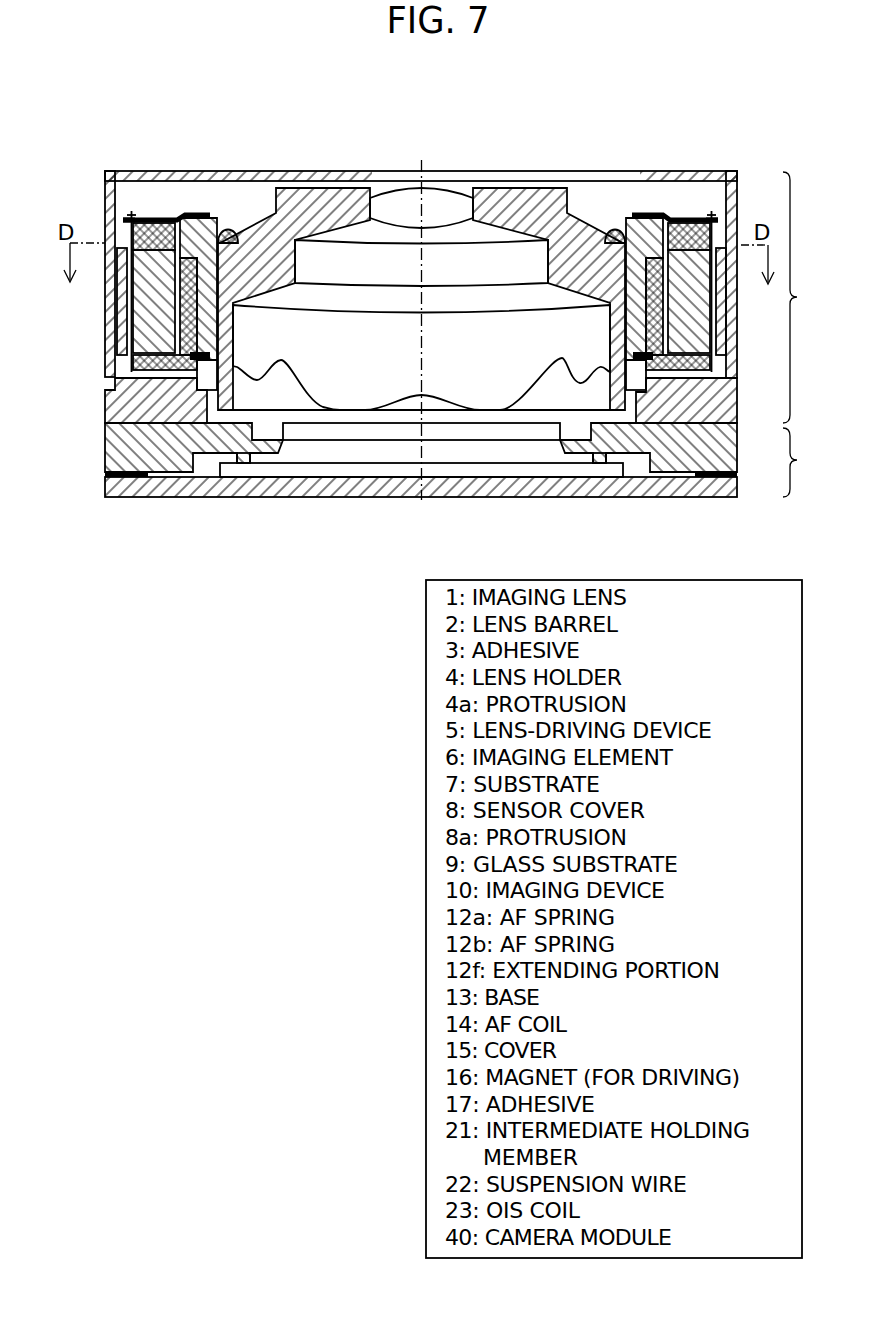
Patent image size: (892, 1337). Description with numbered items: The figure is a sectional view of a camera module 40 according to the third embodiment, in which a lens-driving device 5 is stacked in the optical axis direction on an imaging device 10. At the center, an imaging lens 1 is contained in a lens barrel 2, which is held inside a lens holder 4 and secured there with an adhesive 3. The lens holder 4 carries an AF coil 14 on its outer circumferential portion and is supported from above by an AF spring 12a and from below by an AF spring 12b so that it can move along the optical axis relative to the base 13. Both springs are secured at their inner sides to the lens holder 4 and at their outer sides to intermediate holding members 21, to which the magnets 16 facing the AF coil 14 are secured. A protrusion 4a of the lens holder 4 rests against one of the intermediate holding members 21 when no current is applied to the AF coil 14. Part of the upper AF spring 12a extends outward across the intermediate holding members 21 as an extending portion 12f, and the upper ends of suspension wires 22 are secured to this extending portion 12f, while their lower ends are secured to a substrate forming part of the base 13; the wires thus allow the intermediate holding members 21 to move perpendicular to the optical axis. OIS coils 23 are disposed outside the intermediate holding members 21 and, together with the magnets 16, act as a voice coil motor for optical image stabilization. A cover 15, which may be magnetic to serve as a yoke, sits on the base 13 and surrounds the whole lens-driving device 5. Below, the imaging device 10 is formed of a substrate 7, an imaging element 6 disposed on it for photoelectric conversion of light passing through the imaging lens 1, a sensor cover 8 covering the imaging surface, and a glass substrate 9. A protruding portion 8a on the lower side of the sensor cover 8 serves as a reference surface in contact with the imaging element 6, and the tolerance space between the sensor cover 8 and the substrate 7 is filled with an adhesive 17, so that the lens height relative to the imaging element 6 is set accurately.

The imaging lens 1 is at (457, 340).
The lens barrel 2 is at (505, 207).
The adhesive 3 is at (228, 230).
The lens holder 4 is at (203, 232).
The protrusion 4a is at (190, 356).
The lens-driving device 5 is at (800, 297).
The imaging element 6 is at (312, 470).
The substrate 7 is at (350, 487).
The sensor cover 8 is at (117, 448).
The protruding portion 8a is at (242, 463).
The glass substrate 9 is at (390, 432).
The imaging device 10 is at (807, 462).
The AF spring 12a is at (170, 216).
The AF spring 12b is at (205, 360).
The extending portion 12f is at (130, 216).
The base 13 is at (117, 406).
The AF coil 14 is at (187, 300).
The cover 15 is at (693, 172).
The magnet 16 is at (147, 323).
The adhesive 17 is at (110, 475).
The intermediate holding member 21 is at (133, 243).
The suspension wire 22 is at (128, 214).
The OIS coil 23 is at (117, 350).
The camera module 40 is at (750, 112).